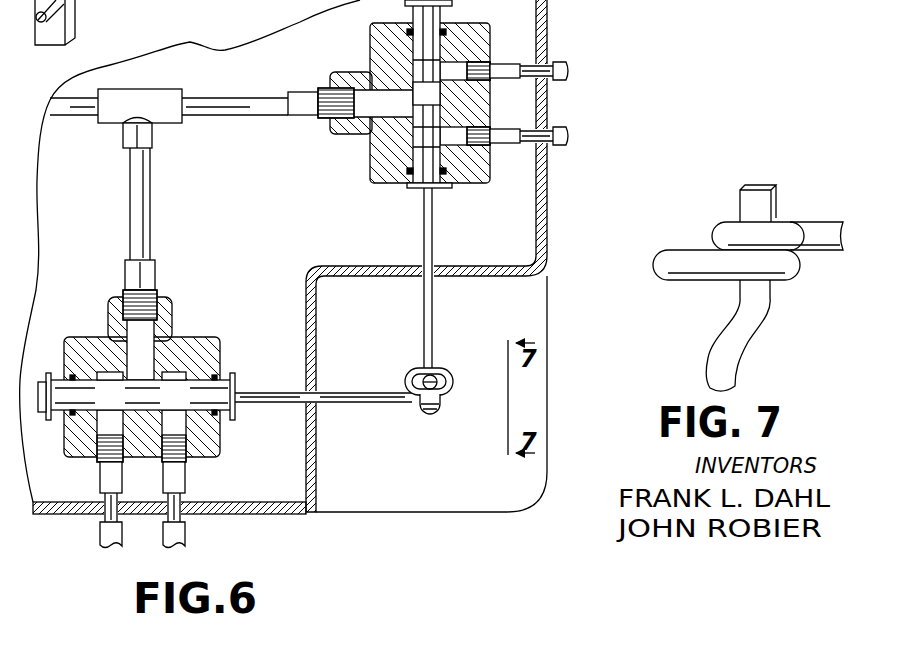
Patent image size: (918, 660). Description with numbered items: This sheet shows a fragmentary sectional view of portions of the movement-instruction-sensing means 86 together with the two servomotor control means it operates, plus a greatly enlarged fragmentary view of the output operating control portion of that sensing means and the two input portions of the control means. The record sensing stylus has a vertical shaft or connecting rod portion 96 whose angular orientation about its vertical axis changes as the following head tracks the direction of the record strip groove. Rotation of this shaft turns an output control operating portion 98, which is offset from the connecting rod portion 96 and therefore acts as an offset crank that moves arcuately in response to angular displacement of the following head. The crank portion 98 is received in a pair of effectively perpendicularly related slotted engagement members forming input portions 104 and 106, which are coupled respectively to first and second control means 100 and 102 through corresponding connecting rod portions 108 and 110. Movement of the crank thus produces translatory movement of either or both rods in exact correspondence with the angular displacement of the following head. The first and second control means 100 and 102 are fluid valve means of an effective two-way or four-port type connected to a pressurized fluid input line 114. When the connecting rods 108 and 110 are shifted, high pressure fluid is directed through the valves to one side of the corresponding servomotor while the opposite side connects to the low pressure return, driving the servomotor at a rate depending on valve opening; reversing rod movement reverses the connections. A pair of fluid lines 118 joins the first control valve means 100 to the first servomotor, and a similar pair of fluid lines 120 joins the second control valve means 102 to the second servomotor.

In FIG. 6, the movement-instruction-sensing means 86 is at (407, 445).
In FIG. 7, the vertical shaft or connecting rod portion 96 is at (708, 360).
In FIG. 6, the output control operating portion 98 is at (452, 383).
In FIG. 7, the output control operating portion 98 is at (772, 198).
In FIG. 6, the first control means 100 is at (350, 192).
In FIG. 6, the second control means 102 is at (235, 327).
In FIG. 6, the input portion 104 is at (445, 369).
In FIG. 7, the input portion 104 is at (783, 222).
In FIG. 6, the input portion 106 is at (420, 410).
In FIG. 7, the input portion 106 is at (700, 280).
In FIG. 6, the connecting rod portion 108 is at (438, 312).
In FIG. 6, the connecting rod portion 110 is at (345, 393).
In FIG. 6, the pressurized fluid input line 114 is at (245, 114).
In FIG. 6, the pair of fluid lines 118 is at (578, 68).
In FIG. 6, the pair of fluid lines 120 is at (175, 549).